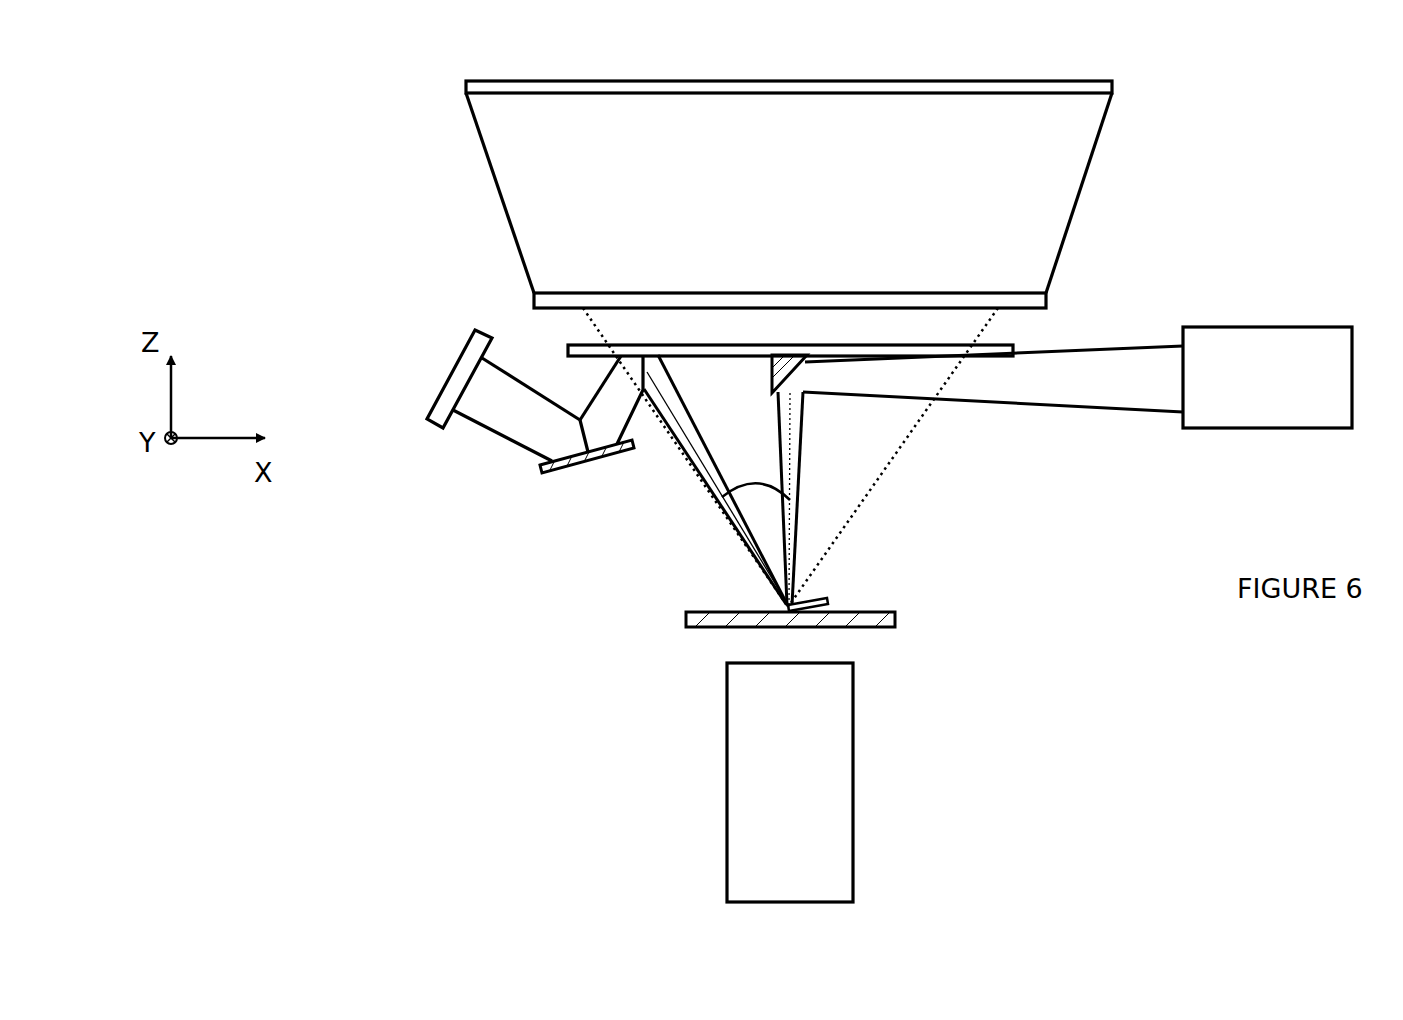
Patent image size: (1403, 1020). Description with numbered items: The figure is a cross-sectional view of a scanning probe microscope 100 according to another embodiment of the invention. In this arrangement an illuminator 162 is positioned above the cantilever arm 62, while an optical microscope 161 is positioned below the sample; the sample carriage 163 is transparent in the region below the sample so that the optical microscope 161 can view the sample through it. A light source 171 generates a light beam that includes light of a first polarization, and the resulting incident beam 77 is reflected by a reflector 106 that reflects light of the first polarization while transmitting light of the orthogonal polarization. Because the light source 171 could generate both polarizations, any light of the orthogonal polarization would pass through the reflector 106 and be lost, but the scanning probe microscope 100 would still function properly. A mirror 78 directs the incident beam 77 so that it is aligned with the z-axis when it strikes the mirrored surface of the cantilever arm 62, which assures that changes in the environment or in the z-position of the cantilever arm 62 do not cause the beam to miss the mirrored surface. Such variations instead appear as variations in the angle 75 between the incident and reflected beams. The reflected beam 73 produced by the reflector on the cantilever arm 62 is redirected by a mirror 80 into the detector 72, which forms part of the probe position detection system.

The scanning probe microscope 100 is at (192, 176).
The illuminator 162 is at (1080, 195).
The reflector 106 is at (1008, 345).
The light source 171 is at (1270, 335).
The incident beam 77 is at (1065, 397).
The mirror 78 is at (770, 377).
The angle 75 is at (748, 483).
The reflected beam 73 is at (703, 478).
The detector 72 is at (474, 340).
The mirror 80 is at (563, 463).
The cantilever arm 62 is at (828, 597).
The sample carriage 163 is at (882, 620).
The optical microscope 161 is at (848, 828).